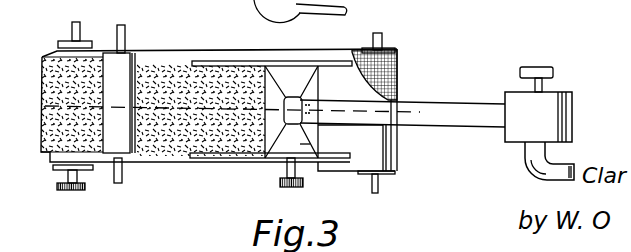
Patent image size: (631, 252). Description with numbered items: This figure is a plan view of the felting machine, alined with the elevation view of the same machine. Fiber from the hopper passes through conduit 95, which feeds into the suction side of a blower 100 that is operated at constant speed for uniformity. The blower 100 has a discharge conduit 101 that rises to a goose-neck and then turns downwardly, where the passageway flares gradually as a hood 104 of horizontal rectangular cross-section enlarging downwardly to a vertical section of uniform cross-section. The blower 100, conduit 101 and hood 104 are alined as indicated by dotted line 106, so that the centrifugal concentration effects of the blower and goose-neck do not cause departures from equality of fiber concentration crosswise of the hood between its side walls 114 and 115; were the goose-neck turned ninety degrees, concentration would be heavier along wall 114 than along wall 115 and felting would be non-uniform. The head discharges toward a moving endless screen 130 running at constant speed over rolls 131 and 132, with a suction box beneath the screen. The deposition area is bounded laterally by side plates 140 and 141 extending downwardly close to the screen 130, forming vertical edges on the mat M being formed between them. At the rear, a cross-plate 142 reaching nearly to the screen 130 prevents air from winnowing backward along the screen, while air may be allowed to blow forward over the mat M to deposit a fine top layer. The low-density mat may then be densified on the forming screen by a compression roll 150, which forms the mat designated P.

The conduit 95 is at (528, 150).
The blower 100 is at (572, 112).
The discharge conduit 101 is at (428, 98).
The hood 104 is at (299, 82).
The dotted line 106 is at (157, 110).
The side wall 114 is at (285, 140).
The side wall 115 is at (281, 79).
The moving endless screen 130 is at (397, 70).
The roll 131 is at (88, 40).
The roll 132 is at (390, 50).
The side plate 140 is at (220, 158).
The side plate 141 is at (223, 61).
The cross-plate 142 is at (322, 137).
The compression roll 150 is at (133, 53).
The mat M is at (180, 142).
The mat P is at (38, 62).